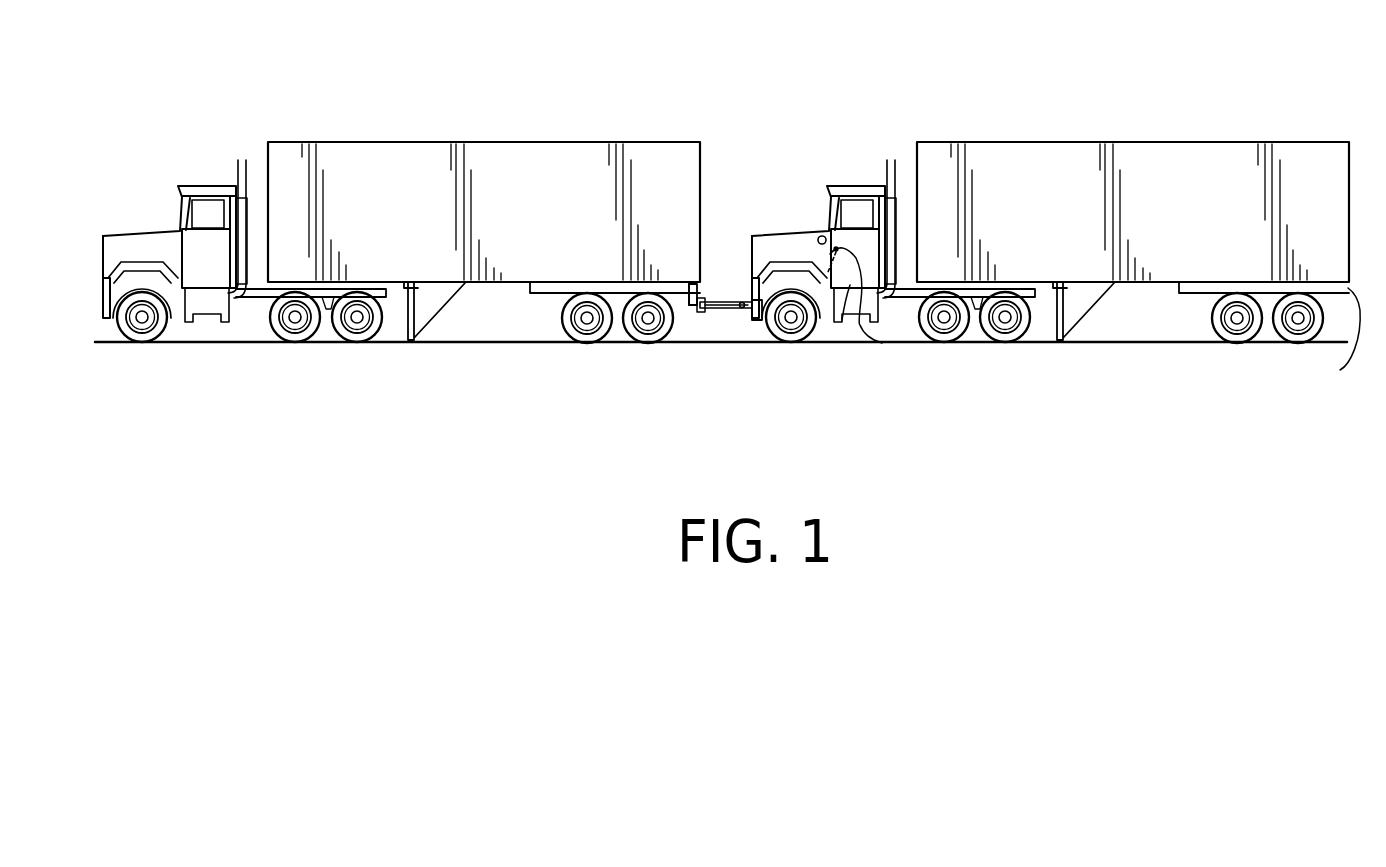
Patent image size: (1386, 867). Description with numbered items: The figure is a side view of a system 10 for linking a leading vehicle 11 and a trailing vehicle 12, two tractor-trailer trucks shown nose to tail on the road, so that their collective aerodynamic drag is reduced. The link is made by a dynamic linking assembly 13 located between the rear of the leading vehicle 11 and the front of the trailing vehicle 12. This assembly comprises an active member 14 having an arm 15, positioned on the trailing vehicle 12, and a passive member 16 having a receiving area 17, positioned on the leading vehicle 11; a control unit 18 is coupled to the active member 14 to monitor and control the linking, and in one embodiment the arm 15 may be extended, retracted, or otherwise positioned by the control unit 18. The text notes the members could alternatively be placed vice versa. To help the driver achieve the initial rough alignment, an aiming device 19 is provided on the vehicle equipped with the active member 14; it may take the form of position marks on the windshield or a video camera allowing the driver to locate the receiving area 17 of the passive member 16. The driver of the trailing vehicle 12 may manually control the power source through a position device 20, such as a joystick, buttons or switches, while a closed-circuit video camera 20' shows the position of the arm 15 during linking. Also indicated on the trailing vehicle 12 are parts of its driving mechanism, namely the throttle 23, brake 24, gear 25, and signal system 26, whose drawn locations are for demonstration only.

The system 10 is at (727, 249).
The leading vehicle 11 is at (352, 377).
The trailing vehicle 12 is at (1056, 273).
The dynamic linking assembly 13 is at (727, 295).
The active member 14 is at (732, 302).
The arm 15 is at (728, 309).
The passive member 16 is at (680, 302).
The receiving area 17 is at (700, 313).
The control unit 18 is at (758, 320).
The aiming device 19 is at (832, 185).
The position device 20 is at (825, 167).
The closed-circuit video camera 20' is at (763, 348).
The throttle 23 is at (882, 343).
The brake 24 is at (1252, 331).
The gear 25 is at (842, 320).
The signal system 26 is at (1340, 370).